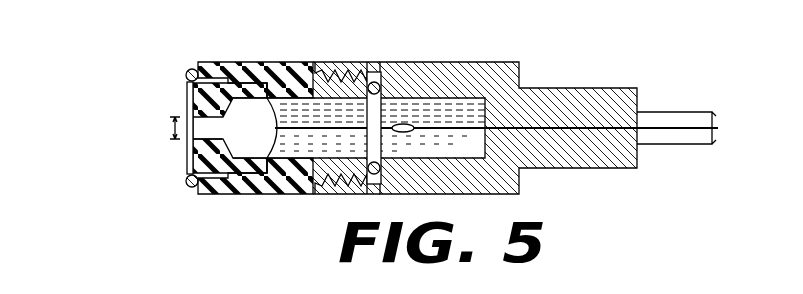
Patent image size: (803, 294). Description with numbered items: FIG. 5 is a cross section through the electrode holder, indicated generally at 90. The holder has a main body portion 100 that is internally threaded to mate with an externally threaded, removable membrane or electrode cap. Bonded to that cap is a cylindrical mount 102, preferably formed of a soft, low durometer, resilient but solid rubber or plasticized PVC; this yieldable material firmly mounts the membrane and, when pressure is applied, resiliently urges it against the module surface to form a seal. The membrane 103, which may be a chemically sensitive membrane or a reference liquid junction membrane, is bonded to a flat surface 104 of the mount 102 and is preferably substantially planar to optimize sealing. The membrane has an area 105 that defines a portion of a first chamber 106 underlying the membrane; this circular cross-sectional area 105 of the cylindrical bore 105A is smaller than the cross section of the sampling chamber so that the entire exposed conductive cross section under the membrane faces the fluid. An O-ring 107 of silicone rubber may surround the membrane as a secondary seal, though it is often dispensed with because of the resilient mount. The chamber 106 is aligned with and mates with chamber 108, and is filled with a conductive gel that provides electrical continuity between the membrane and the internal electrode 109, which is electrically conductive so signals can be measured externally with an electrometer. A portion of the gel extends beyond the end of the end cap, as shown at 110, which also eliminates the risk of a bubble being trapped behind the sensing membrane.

The optical fiber connector assembly 90 is at (513, 34).
The main body portion 100 is at (512, 62).
The cylindrical mount 102 is at (208, 166).
The membrane 103 is at (186, 105).
The flat surface 104 is at (196, 92).
The area 105 is at (174, 128).
The cylindrical bore 105A is at (206, 132).
The first chamber 106 is at (282, 125).
The O-ring 107 is at (187, 74).
The chamber 108 is at (450, 110).
The internal electrode 109 is at (403, 123).
The portion of the gel 110 is at (354, 118).